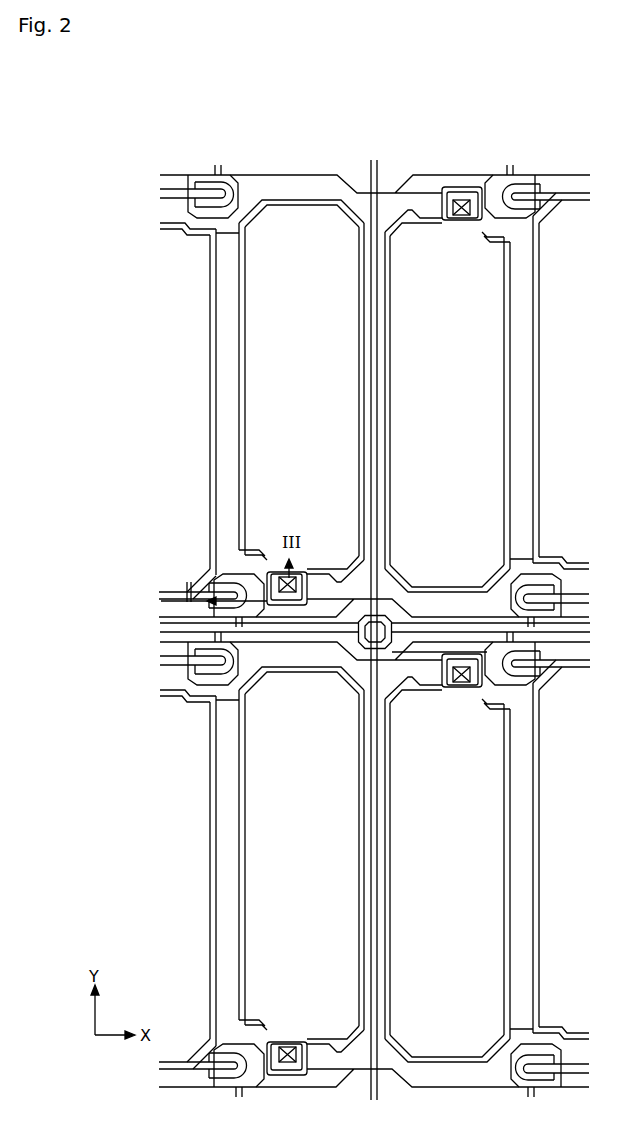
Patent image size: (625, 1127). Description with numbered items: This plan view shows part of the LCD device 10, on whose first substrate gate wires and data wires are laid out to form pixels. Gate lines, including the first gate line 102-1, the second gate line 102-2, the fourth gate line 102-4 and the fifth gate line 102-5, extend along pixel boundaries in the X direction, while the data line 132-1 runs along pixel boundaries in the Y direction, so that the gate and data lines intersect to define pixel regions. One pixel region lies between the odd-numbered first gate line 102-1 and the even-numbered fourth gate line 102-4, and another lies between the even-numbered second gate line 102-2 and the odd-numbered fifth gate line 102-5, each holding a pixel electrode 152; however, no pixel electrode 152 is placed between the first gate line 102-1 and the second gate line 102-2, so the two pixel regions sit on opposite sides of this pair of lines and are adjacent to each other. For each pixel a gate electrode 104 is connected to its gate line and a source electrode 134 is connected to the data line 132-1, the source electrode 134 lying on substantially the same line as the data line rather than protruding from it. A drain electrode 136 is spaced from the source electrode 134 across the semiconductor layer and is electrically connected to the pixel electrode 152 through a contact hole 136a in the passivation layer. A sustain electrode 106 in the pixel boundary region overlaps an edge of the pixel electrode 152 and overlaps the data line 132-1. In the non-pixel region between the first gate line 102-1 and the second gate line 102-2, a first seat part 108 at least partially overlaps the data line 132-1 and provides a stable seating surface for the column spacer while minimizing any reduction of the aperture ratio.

The LCD device 10 is at (360, 133).
The first gate line 102-1 is at (162, 618).
The second gate line 102-2 is at (162, 644).
The fourth gate line 102-4 is at (162, 175).
The fifth gate line 102-5 is at (162, 1087).
The gate electrode 104 is at (208, 613).
The sustain electrode 106 is at (216, 283).
The first seat part 108 is at (365, 641).
The data line 132-1 is at (371, 355).
The source electrode 134 is at (233, 582).
The drain electrode 136 is at (280, 563).
The contact hole 136a is at (253, 597).
The pixel electrode 152 is at (270, 332).